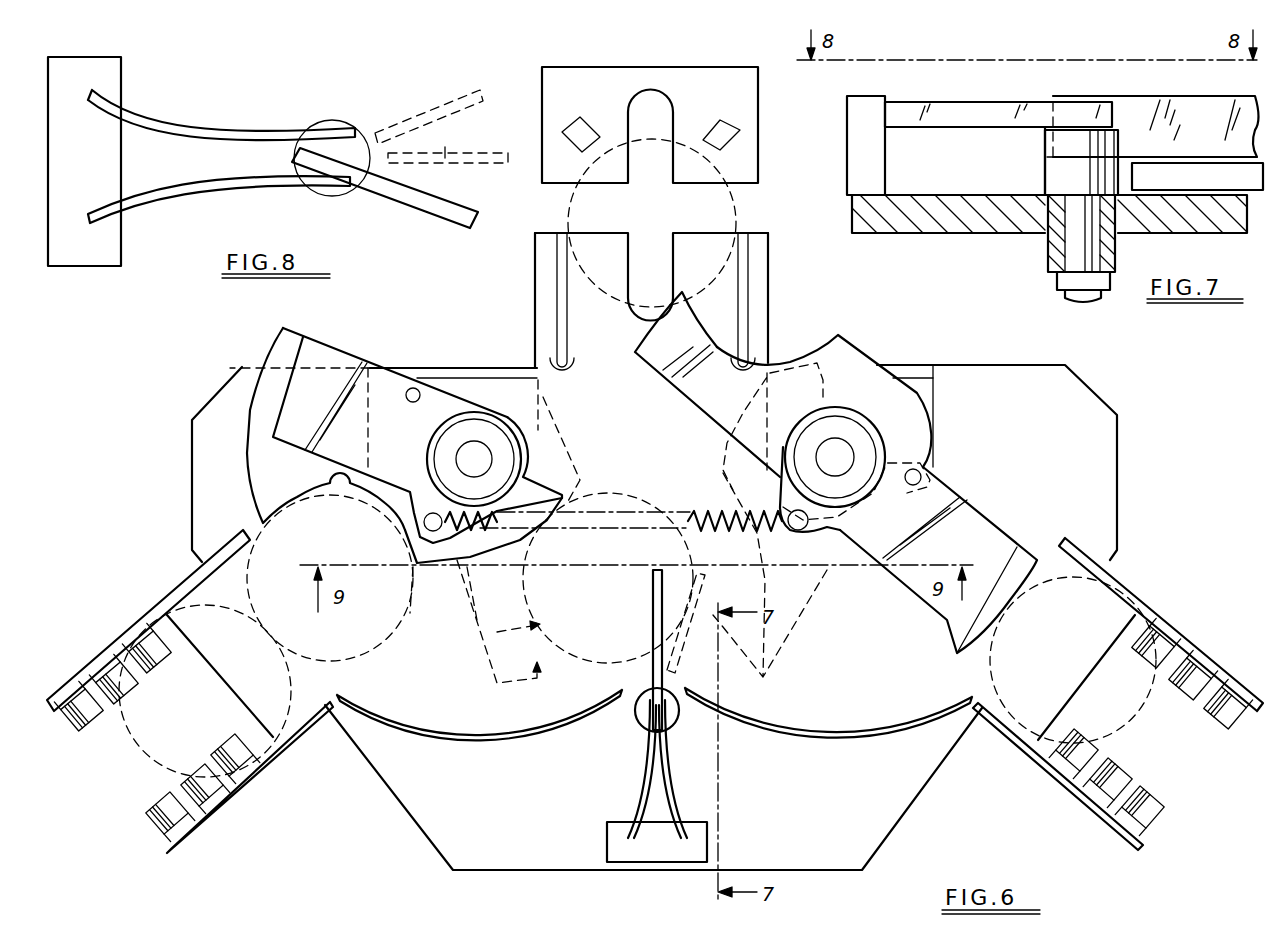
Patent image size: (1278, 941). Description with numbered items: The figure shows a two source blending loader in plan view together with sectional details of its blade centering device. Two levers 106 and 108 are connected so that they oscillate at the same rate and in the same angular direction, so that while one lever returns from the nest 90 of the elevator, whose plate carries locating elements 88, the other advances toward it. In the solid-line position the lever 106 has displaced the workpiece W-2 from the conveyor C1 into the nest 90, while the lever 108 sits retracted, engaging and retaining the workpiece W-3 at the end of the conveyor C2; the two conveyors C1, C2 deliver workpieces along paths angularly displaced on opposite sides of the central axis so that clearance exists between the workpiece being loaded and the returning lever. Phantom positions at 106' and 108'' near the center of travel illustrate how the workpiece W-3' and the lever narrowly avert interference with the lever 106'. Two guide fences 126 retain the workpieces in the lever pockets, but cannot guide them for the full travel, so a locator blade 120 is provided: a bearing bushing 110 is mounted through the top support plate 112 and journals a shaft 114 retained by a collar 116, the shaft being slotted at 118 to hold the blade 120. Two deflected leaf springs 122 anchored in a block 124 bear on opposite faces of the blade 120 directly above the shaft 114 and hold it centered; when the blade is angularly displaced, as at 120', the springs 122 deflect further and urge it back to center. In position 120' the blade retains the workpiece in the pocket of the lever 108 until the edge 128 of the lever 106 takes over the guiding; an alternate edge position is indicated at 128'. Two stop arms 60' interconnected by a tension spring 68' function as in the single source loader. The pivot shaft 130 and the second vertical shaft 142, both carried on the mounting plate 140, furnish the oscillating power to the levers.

In FIG. 6, the stop arms 60' is at (671, 480).
In FIG. 6, the tension spring 68' is at (616, 504).
In FIG. 6, the locating pins 88 is at (582, 130).
In FIG. 6, the nest 90 is at (728, 76).
In FIG. 6, the lever 106 is at (707, 384).
In FIG. 6, the lever (phantom position) 106' is at (794, 575).
In FIG. 7, the lever 108 is at (1197, 176).
In FIG. 6, the lever 108 is at (630, 534).
In FIG. 6, the base body portion (alternate) 108'' is at (495, 546).
In FIG. 7, the bearing bushing 110 is at (1048, 258).
In FIG. 7, the top support plate 112 is at (923, 225).
In FIG. 6, the top support plate 112 is at (922, 777).
In FIG. 8, the shaft 114 is at (360, 135).
In FIG. 7, the shaft 114 is at (1057, 177).
In FIG. 6, the shaft 114 is at (645, 715).
In FIG. 7, the collar 116 is at (1060, 283).
In FIG. 8, the slot 118 is at (300, 150).
In FIG. 8, the locator blade 120 is at (441, 126).
In FIG. 7, the locator blade 120 is at (1156, 115).
In FIG. 6, the locator blade 120 is at (679, 649).
In FIG. 8, the locator blade (deflected position) 120' is at (408, 188).
In FIG. 8, the leaf springs 122 is at (212, 178).
In FIG. 7, the leaf springs 122 is at (985, 112).
In FIG. 6, the leaf springs 122 is at (660, 788).
In FIG. 8, the block 124 is at (112, 80).
In FIG. 7, the block 124 is at (873, 170).
In FIG. 6, the block 124 is at (607, 842).
In FIG. 6, the guide fences 126 is at (470, 740).
In FIG. 6, the edge 128 is at (824, 427).
In FIG. 6, the right pivot arm (alternate position) 128' is at (795, 441).
In FIG. 6, the shaft 130 is at (474, 459).
In FIG. 6, the mounting plate 140 is at (478, 374).
In FIG. 6, the second vertical shaft 142 is at (835, 457).
In FIG. 6, the workpiece W-2 is at (735, 200).
In FIG. 6, the workpiece W-3 is at (637, 636).
In FIG. 6, the workpiece (phantom position) W-3' is at (608, 578).
In FIG. 6, the conveyor C1 is at (1216, 638).
In FIG. 6, the conveyor C2 is at (236, 810).